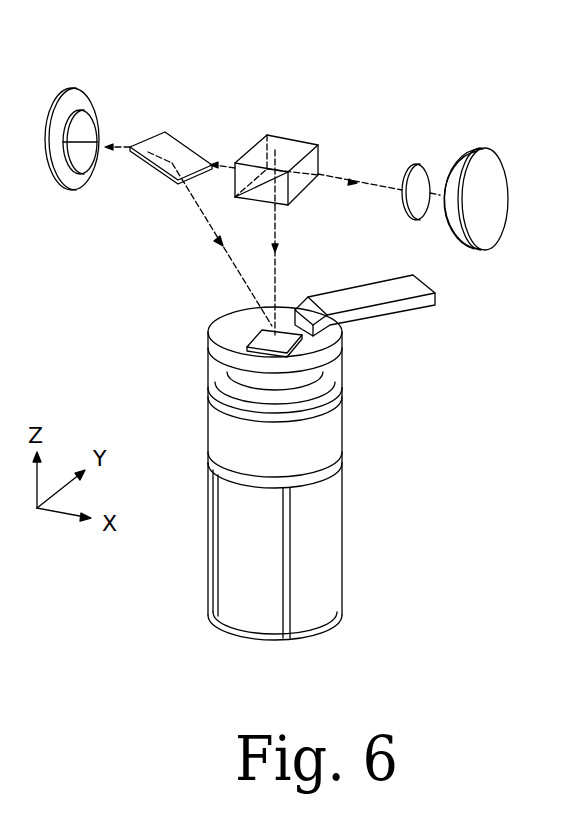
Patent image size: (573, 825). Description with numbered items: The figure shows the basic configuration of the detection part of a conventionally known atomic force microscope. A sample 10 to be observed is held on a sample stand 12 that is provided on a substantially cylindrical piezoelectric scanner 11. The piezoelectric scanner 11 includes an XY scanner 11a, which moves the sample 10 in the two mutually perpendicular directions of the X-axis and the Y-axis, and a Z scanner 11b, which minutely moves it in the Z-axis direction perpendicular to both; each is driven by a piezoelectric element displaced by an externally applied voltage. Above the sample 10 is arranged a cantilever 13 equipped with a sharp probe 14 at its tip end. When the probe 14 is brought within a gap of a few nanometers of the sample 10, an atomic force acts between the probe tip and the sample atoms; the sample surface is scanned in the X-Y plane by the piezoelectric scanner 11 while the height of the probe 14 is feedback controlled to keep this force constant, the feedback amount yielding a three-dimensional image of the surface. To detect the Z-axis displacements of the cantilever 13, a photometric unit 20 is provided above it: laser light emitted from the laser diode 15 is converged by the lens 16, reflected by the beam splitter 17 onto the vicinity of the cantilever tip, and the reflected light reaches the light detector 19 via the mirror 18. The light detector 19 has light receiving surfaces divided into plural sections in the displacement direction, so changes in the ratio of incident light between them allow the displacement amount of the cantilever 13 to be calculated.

The sample 10 is at (253, 337).
The piezoelectric scanner 11 is at (438, 445).
The XY scanner 11a is at (342, 577).
The Z scanner 11b is at (342, 440).
The sample stand 12 is at (207, 360).
The cantilever 13 is at (323, 332).
The probe 14 is at (342, 370).
The laser diode 15 is at (492, 149).
The lens 16 is at (421, 164).
The beam splitter 17 is at (285, 137).
The mirror 18 is at (172, 131).
The light detector 19 is at (95, 108).
The photometric unit 20 is at (535, 103).